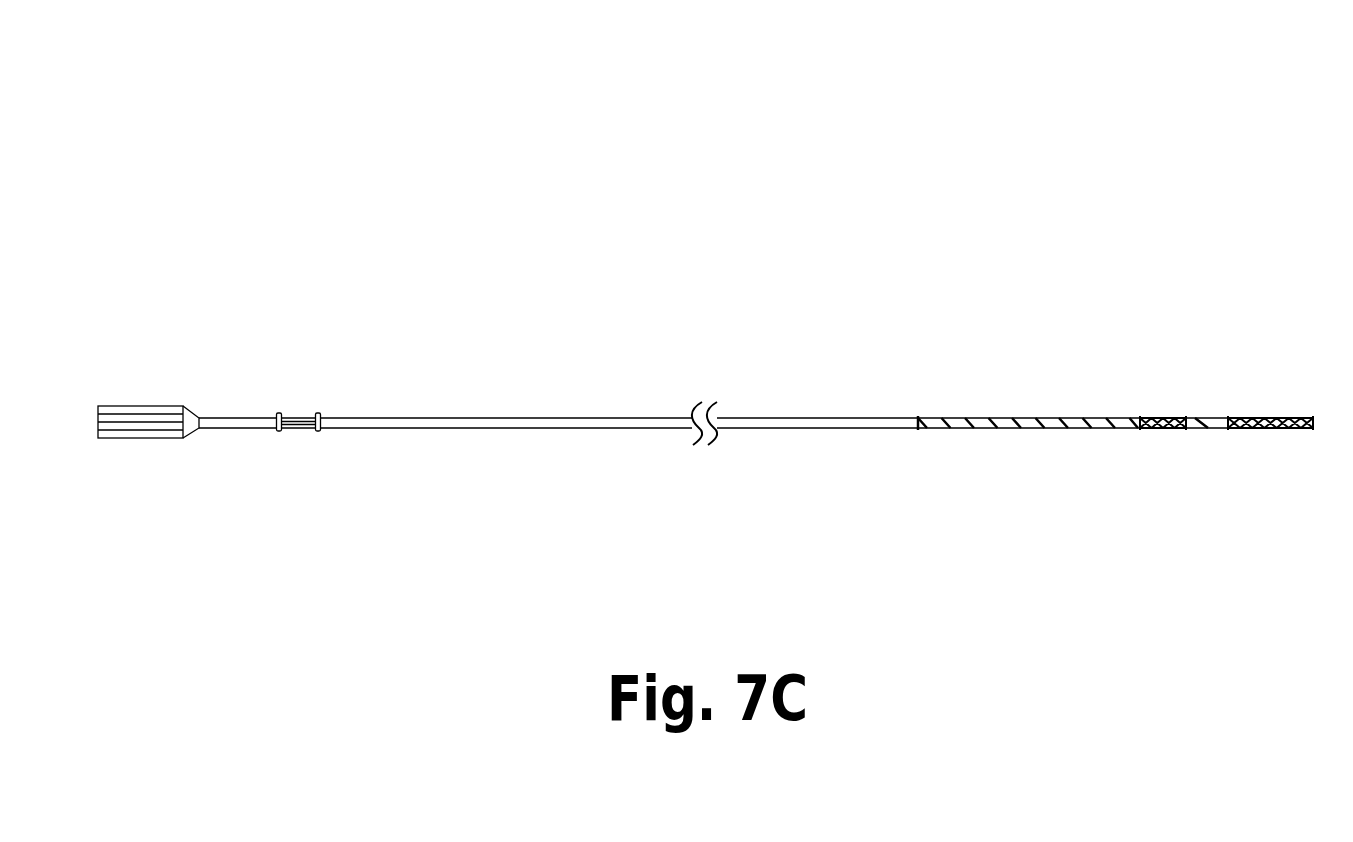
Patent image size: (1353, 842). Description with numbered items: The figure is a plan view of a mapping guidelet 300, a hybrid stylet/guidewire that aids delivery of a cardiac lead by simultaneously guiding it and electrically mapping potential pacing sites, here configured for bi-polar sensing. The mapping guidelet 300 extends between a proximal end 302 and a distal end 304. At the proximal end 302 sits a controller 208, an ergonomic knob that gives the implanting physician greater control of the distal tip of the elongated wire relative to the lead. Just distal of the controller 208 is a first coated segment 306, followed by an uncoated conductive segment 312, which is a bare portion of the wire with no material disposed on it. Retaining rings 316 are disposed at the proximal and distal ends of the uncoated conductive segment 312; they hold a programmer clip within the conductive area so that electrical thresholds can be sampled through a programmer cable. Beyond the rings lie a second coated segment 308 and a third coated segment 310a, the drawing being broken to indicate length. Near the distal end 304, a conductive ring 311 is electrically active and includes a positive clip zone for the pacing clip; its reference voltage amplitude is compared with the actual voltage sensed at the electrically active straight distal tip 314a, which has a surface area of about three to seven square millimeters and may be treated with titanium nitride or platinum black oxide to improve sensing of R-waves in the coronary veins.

The mapping guidelet 300 is at (693, 158).
The proximal end 302 is at (152, 345).
The distal end 304 is at (1212, 348).
The controller 208 is at (164, 406).
The first coated segment 306 is at (278, 468).
The second coated segment 308 is at (322, 468).
The third coated segment 310a is at (1226, 468).
The conductive ring 311 is at (1187, 397).
The uncoated conductive segment 312 is at (298, 397).
The straight distal tip 314a is at (1315, 468).
The retaining rings 316 is at (277, 437).